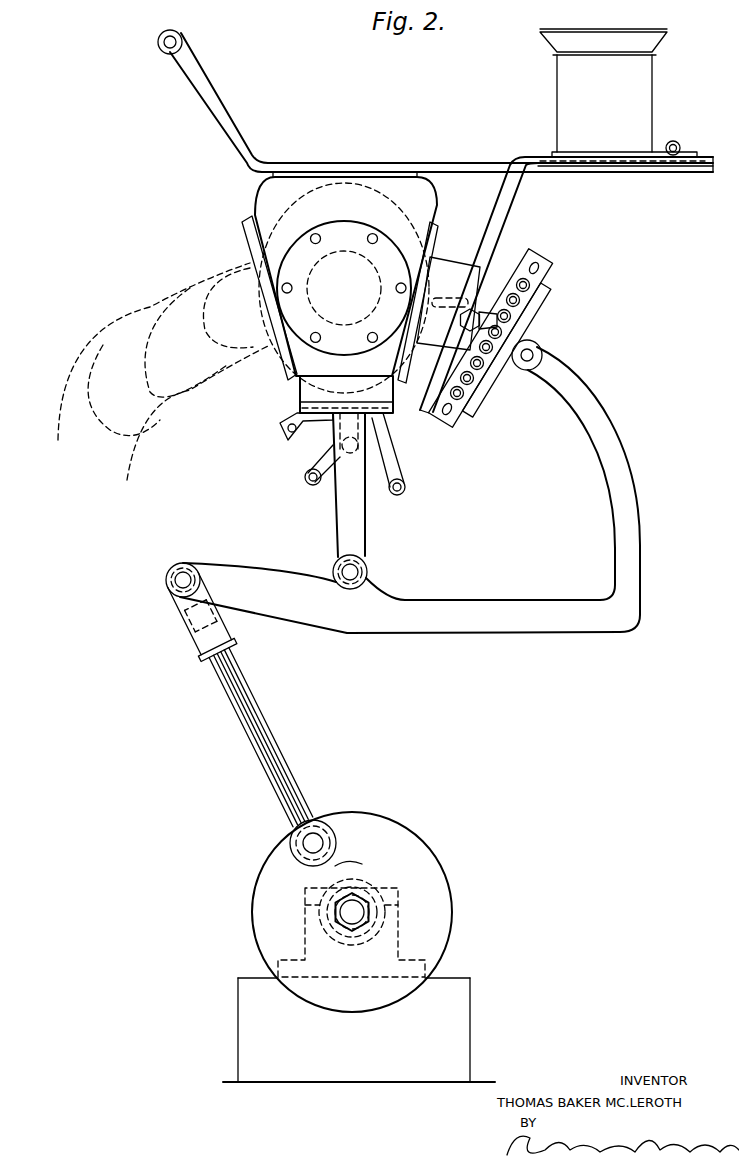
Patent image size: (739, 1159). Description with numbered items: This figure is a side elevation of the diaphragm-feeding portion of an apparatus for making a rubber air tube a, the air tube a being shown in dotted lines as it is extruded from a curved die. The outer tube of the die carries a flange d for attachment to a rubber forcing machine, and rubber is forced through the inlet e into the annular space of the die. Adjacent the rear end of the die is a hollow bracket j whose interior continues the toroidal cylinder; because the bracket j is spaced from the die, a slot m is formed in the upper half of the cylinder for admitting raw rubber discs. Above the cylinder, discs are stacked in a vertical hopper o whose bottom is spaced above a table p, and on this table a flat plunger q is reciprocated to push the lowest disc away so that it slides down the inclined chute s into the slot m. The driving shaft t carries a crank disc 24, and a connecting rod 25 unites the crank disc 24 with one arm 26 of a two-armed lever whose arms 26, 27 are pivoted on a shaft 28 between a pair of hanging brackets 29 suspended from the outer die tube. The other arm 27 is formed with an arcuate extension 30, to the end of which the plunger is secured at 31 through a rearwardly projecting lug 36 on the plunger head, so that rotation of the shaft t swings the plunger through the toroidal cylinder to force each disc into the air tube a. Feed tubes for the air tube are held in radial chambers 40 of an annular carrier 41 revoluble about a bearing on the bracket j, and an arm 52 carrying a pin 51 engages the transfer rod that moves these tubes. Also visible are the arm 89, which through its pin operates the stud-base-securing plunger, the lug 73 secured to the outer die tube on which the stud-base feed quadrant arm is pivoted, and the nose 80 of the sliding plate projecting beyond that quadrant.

The air tube a is at (193, 283).
The inlet e is at (297, 257).
The flange d is at (440, 258).
The slot m is at (482, 302).
The chute s is at (507, 190).
The table p is at (648, 165).
The hopper o is at (633, 93).
The flat plunger q is at (603, 157).
The radial chambers 40 is at (540, 258).
The annular carrier 41 is at (545, 276).
The hollow bracket j is at (548, 300).
The rearwardly projecting lug 36 is at (535, 342).
The plunger securing point 31 is at (530, 353).
The hanging brackets 29 is at (343, 505).
The lug 73 is at (283, 420).
The arm 89 is at (330, 455).
The nose 80 is at (306, 477).
The arm 52 is at (392, 458).
The pin 51 is at (405, 487).
The lever arm 26 is at (228, 562).
The lever arm 27 is at (517, 612).
The arcuate extension 30 is at (610, 477).
The shaft 28 is at (348, 570).
The connecting rod 25 is at (273, 763).
The crank disc 24 is at (453, 917).
The shaft t is at (352, 912).